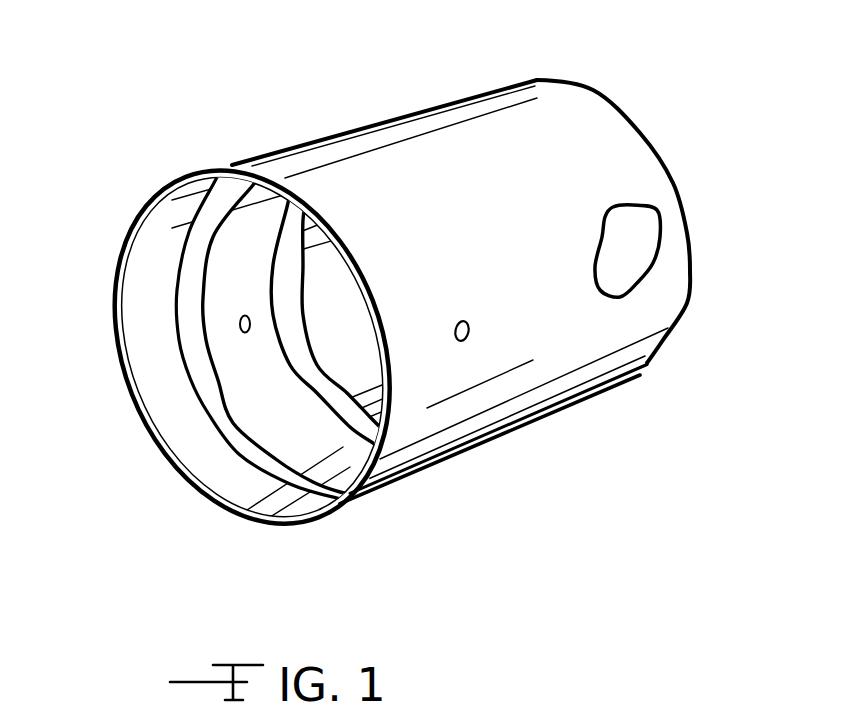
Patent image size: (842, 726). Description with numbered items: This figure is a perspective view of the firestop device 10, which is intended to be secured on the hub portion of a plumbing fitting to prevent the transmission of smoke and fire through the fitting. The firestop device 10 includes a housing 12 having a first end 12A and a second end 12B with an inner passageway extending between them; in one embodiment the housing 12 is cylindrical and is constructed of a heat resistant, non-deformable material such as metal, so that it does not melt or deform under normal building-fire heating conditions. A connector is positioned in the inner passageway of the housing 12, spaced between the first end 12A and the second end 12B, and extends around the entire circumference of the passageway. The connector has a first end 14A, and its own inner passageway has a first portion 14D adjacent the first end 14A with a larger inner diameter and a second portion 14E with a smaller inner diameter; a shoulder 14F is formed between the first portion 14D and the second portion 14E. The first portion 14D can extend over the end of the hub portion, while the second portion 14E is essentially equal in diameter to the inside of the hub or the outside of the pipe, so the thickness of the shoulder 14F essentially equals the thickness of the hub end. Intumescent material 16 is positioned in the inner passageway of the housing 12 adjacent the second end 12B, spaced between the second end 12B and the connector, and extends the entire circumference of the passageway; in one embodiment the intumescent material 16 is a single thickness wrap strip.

The firestop device 10 is at (392, 294).
The housing 12 is at (428, 107).
The first end 12A is at (137, 222).
The second end 12B is at (642, 132).
The first end 14A is at (225, 413).
The first portion 14D is at (260, 273).
The second portion 14E is at (357, 319).
The shoulder 14F is at (307, 362).
The intumescent material 16 is at (647, 235).